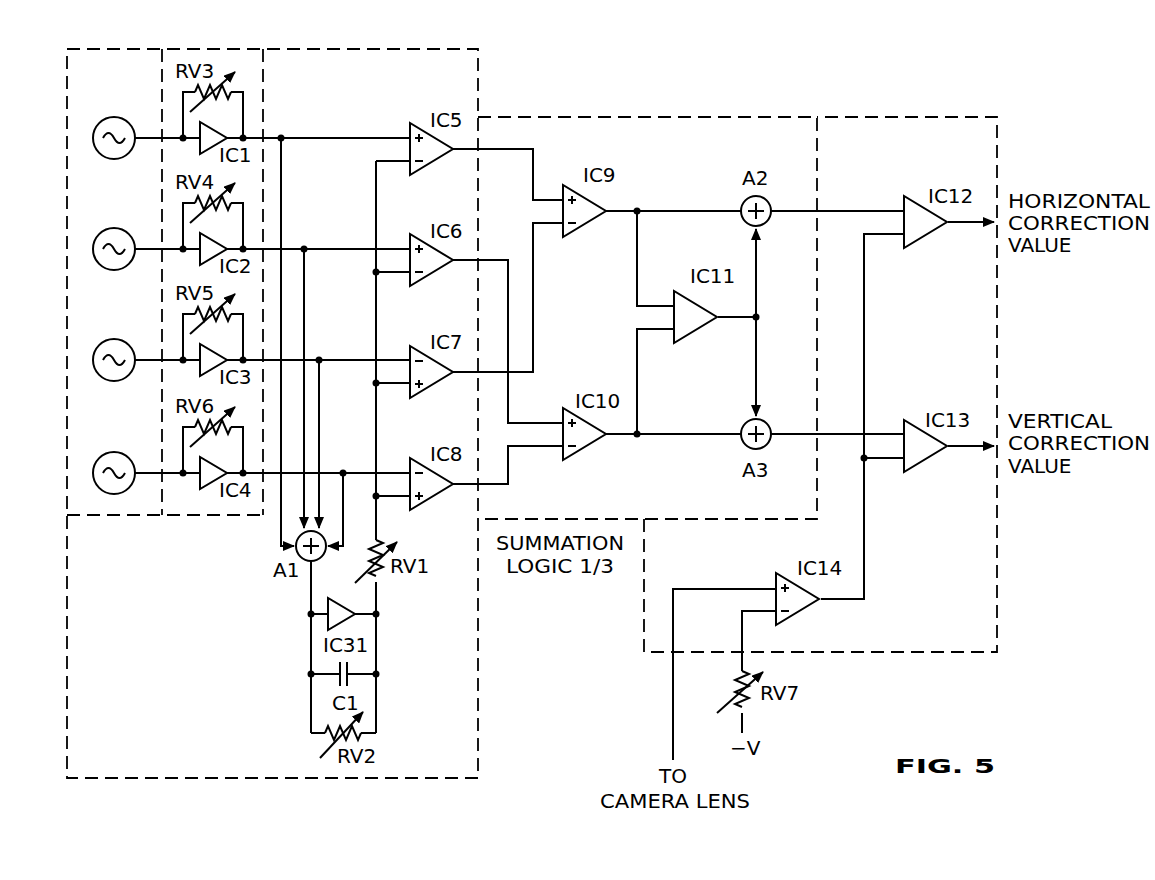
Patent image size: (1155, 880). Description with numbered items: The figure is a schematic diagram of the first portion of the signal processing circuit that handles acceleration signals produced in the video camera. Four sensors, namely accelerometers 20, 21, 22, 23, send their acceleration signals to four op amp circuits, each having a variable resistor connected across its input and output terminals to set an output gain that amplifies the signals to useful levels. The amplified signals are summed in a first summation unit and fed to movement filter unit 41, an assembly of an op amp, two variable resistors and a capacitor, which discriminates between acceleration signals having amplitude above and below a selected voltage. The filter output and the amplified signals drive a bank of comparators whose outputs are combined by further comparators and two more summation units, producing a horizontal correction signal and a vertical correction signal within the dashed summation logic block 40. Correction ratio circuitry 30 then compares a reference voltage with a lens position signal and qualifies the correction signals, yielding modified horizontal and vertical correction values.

The accelerometer 20 is at (110, 117).
The accelerometer 21 is at (110, 228).
The accelerometer 22 is at (110, 339).
The accelerometer 23 is at (110, 452).
The correction ratio circuitry 30 is at (1003, 551).
The summation logic 40 is at (548, 112).
The movement filter unit 41 is at (383, 781).